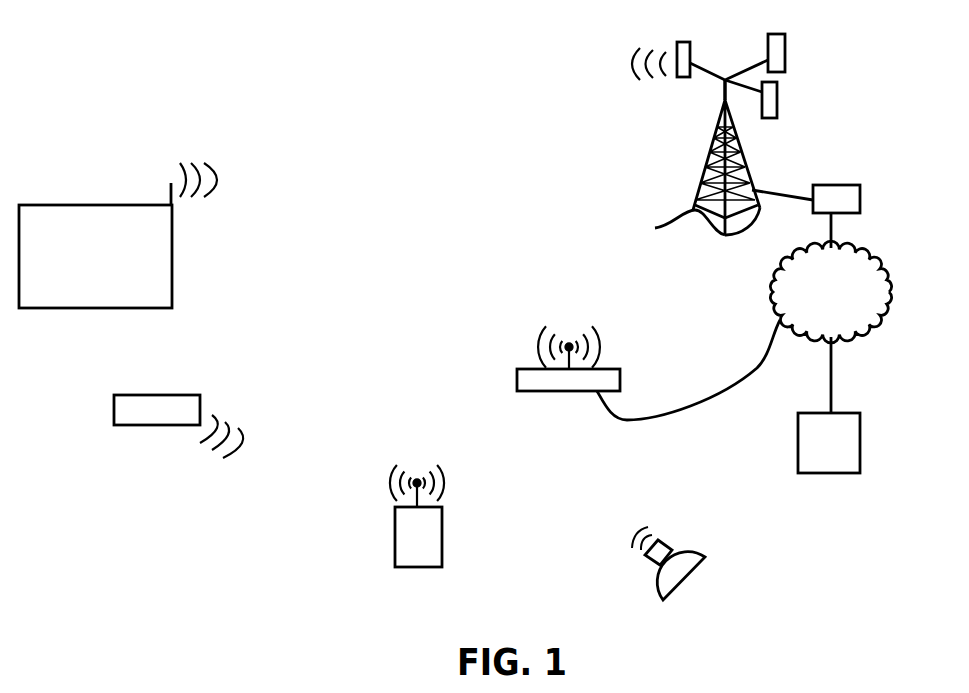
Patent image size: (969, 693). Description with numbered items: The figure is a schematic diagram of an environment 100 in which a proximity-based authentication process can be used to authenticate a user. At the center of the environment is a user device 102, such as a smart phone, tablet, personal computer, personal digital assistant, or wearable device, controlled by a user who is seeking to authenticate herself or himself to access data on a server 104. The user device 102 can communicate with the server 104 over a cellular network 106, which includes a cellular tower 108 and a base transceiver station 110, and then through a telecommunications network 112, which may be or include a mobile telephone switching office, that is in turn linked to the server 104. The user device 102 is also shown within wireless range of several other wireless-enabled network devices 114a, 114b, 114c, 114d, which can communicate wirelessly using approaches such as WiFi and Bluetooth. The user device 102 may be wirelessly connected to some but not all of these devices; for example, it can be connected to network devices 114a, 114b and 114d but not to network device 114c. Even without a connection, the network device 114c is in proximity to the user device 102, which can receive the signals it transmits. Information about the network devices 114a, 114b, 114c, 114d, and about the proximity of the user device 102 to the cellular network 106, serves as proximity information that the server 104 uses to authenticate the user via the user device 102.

The environment 100 is at (155, 575).
The user device 102 is at (442, 533).
The server 104 is at (852, 415).
The cellular network 106 is at (716, 134).
The cellular tower 108 is at (742, 160).
The base transceiver station 110 is at (817, 185).
The telecommunications network 112 is at (880, 262).
The network device 114a is at (172, 292).
The network device 114b is at (185, 395).
The network device 114c is at (620, 377).
The network device 114d is at (695, 553).